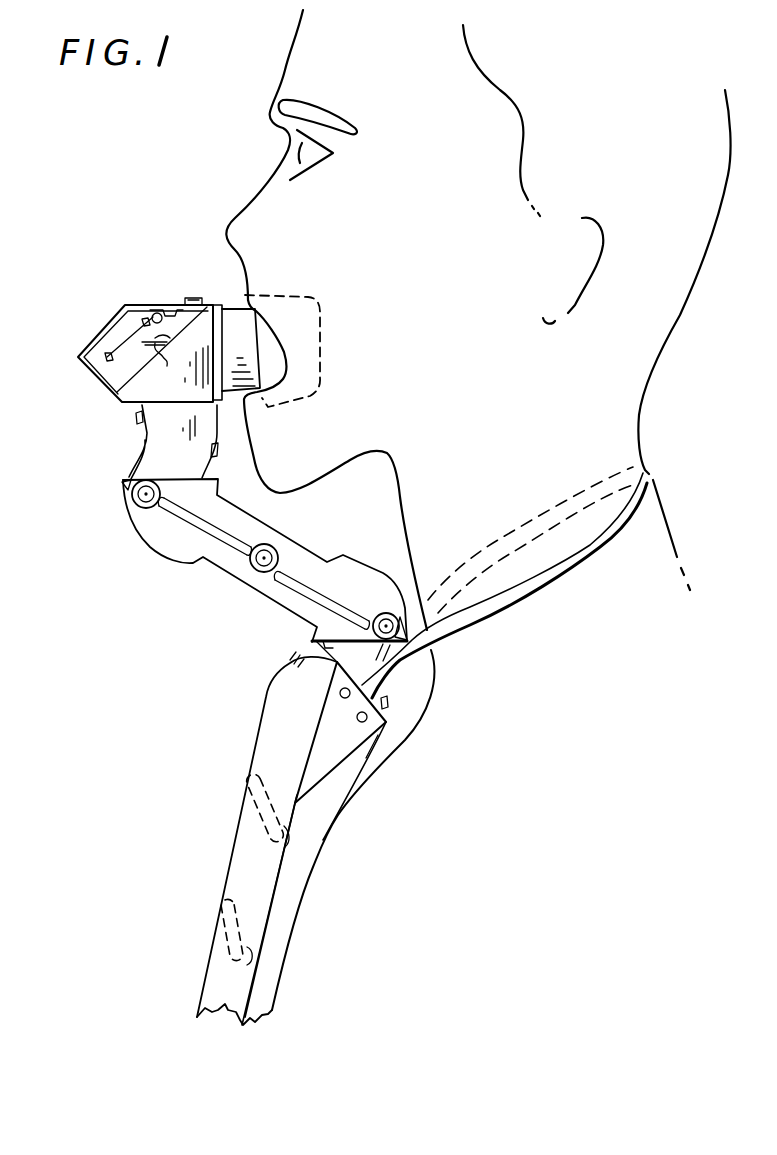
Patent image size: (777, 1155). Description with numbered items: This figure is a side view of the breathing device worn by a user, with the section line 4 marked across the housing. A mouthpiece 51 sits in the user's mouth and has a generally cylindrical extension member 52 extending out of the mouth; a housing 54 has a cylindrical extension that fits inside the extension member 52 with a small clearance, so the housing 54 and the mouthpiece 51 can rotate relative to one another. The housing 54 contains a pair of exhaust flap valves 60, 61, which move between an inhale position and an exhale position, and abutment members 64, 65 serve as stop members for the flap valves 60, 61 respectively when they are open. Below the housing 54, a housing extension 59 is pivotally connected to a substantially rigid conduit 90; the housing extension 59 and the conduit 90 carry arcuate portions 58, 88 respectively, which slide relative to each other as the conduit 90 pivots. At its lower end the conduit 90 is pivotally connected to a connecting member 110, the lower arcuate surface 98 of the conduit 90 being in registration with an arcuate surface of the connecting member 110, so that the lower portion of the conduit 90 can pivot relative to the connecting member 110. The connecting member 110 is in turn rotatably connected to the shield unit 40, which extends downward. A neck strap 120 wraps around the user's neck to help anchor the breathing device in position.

The section line 4- 4 is at (82, 217).
The shield unit 40 is at (242, 782).
The mouthpiece 51 is at (286, 310).
The extension member 52 is at (230, 323).
The housing 54 is at (118, 402).
The arcuate portion 58 is at (127, 474).
The housing extension 59 is at (132, 449).
The exhaust valve 60 is at (153, 313).
The exhaust valve 61 is at (174, 360).
The abutment member 64 is at (171, 310).
The abutment member 65 is at (170, 338).
The arcuate portion 88 is at (132, 527).
The conduit 90 is at (213, 575).
The lower arcuate surface 98 is at (388, 577).
The connecting member 110 is at (312, 635).
The neck strap 120 is at (492, 608).